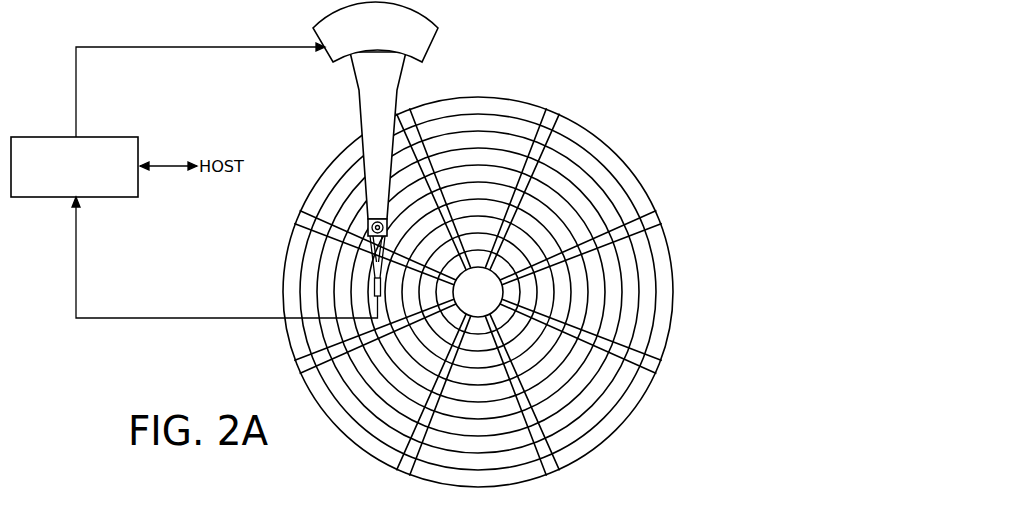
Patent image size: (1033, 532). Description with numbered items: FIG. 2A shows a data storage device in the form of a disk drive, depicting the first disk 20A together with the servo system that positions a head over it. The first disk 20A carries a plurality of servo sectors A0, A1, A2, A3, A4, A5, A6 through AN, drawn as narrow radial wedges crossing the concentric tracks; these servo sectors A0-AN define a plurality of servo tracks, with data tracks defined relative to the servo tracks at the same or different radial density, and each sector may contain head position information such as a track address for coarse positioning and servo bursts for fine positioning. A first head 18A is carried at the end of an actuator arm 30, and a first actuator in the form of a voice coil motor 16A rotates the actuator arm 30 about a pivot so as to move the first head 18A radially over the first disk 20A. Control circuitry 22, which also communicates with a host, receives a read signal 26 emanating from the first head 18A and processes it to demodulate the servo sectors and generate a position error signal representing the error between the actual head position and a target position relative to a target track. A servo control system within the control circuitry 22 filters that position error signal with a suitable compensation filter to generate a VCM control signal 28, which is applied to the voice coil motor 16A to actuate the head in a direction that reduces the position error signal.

The first disk 20A is at (598, 125).
The first actuator (voice coil motor) 16A is at (333, 62).
The first head 18A is at (369, 283).
The actuator arm 30 is at (362, 121).
The control circuitry 22 is at (107, 137).
The control signal 28 is at (76, 79).
The read signal 26 is at (191, 318).
The servo sector A0 is at (557, 116).
The servo sector A1 is at (654, 221).
The servo sector A2 is at (657, 368).
The servo sector A3 is at (549, 470).
The servo sector A4 is at (403, 470).
The servo sector A5 is at (298, 362).
The servo sector A6 is at (298, 216).
The servo sector AN is at (415, 116).